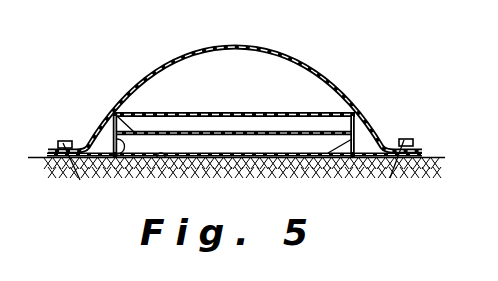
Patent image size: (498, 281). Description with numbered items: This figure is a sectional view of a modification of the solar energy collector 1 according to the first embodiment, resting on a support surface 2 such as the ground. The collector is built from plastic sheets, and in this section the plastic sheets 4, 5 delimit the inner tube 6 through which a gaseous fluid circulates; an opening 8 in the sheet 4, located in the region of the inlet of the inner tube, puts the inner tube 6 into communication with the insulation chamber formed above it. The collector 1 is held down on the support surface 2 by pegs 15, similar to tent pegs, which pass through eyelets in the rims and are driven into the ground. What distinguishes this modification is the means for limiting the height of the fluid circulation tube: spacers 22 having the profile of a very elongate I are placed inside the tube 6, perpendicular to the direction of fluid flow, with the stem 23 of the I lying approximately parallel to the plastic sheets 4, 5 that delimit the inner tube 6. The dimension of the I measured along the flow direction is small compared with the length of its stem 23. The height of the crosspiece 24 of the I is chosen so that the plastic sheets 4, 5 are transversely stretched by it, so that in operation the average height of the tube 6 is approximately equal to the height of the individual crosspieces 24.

The solar energy collector 1 is at (320, 66).
The support surface 2 is at (436, 156).
The plastic sheet 4 is at (197, 112).
The plastic sheet 5 is at (160, 157).
The inner tube 6 is at (312, 122).
The opening 8 is at (240, 103).
The pegs 15 is at (63, 142).
The spacers 22 is at (115, 113).
The stem 23 is at (180, 130).
The crosspiece 24 is at (116, 172).